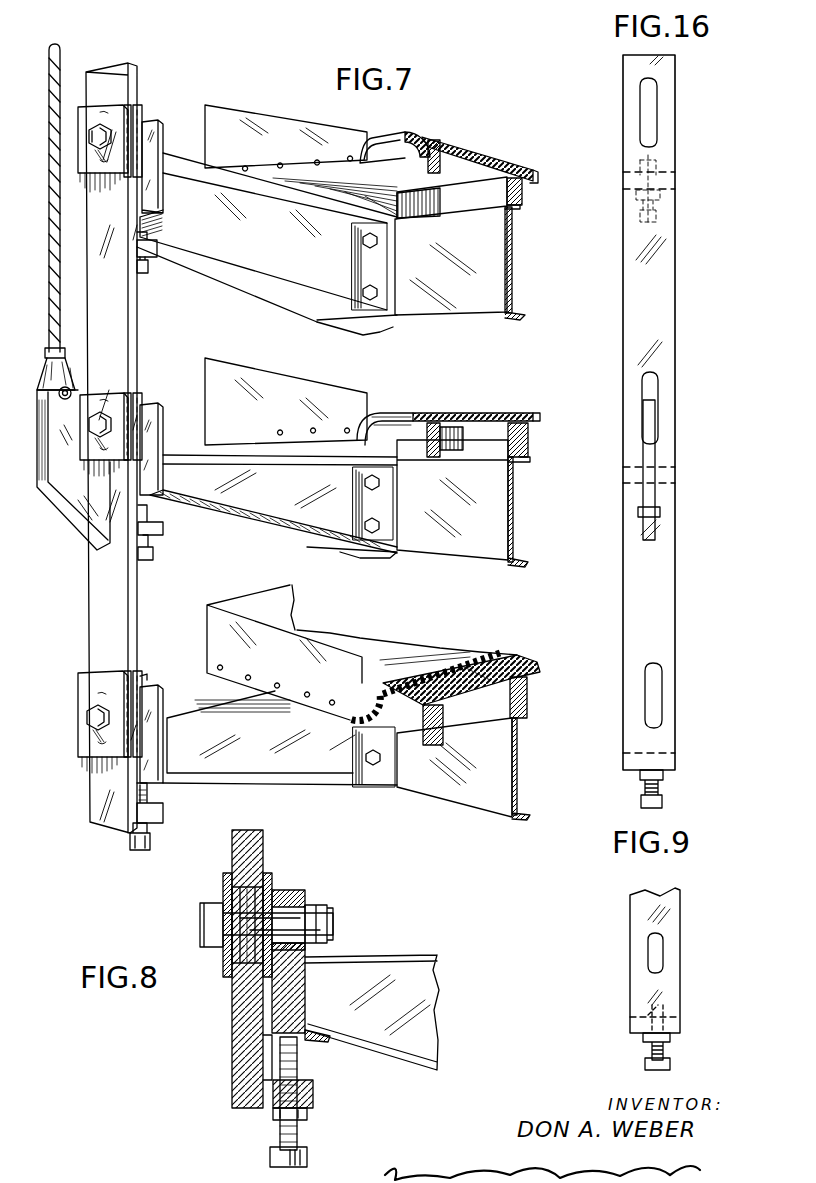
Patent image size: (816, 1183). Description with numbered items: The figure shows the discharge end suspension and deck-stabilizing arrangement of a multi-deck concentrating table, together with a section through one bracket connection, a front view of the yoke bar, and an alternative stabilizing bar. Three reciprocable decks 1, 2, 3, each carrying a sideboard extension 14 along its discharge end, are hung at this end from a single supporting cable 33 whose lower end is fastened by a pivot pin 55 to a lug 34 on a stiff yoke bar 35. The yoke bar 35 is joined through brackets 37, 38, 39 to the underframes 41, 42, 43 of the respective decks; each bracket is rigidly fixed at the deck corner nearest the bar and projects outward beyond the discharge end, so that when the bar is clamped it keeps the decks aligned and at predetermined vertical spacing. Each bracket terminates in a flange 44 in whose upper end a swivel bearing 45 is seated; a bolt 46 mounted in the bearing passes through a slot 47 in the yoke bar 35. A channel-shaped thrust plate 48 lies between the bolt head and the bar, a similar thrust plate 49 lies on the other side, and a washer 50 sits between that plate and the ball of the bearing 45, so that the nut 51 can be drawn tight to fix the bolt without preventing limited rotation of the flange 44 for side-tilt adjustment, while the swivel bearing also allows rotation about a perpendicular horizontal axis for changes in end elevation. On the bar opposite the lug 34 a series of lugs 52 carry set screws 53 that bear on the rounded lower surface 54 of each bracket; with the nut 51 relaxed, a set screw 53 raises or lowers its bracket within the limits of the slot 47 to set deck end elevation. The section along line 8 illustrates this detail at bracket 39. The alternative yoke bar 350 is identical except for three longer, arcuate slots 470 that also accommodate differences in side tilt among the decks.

In FIG. 7, the deck 1 is at (472, 142).
In FIG. 7, the deck 2 is at (507, 414).
In FIG. 7, the deck 3 is at (450, 648).
In FIG. 7, the middling corner 8 is at (213, 640).
In FIG. 7, the sideboard extension 14 is at (288, 118).
In FIG. 7, the cable 33 is at (50, 300).
In FIG. 7, the lug 34 is at (68, 490).
In FIG. 16, the lug 34 is at (650, 520).
In FIG. 7, the yoke bar 35 is at (92, 598).
In FIG. 8, the yoke bar 35 is at (232, 1018).
In FIG. 9, the yoke bar 35 is at (633, 918).
In FIG. 7, the bracket 37 is at (258, 288).
In FIG. 7, the bracket 38 is at (272, 515).
In FIG. 7, the bracket 39 is at (288, 780).
In FIG. 8, the bracket 39 is at (425, 1035).
In FIG. 7, the underframe 41 is at (492, 306).
In FIG. 7, the underframe 42 is at (468, 548).
In FIG. 7, the underframe 43 is at (442, 790).
In FIG. 7, the flange 44 is at (163, 133).
In FIG. 8, the flange 44 is at (305, 893).
In FIG. 8, the swivel bearing 45 is at (290, 945).
In FIG. 7, the bolt 46 is at (90, 135).
In FIG. 8, the bolt 46 is at (222, 926).
In FIG. 7, the slot 47 is at (110, 112).
In FIG. 8, the slot 47 is at (232, 892).
In FIG. 9, the slot 47 is at (658, 955).
In FIG. 7, the thrust plate 48 is at (80, 165).
In FIG. 8, the thrust plate 48 is at (223, 966).
In FIG. 7, the thrust plate 49 is at (148, 690).
In FIG. 8, the thrust plate 49 is at (268, 880).
In FIG. 8, the washer 50 is at (272, 906).
In FIG. 8, the nut 51 is at (330, 945).
In FIG. 7, the lug 52 is at (157, 252).
In FIG. 8, the lug 52 is at (313, 1098).
In FIG. 9, the lug 52 is at (668, 1012).
In FIG. 7, the set screw 53 is at (148, 276).
In FIG. 8, the set screw 53 is at (298, 1062).
In FIG. 9, the set screw 53 is at (652, 1050).
In FIG. 8, the lower surface 54 is at (268, 1042).
In FIG. 7, the pivot pin 55 is at (60, 400).
In FIG. 16, the yoke bar 350 is at (670, 303).
In FIG. 16, the slot 470 is at (653, 122).